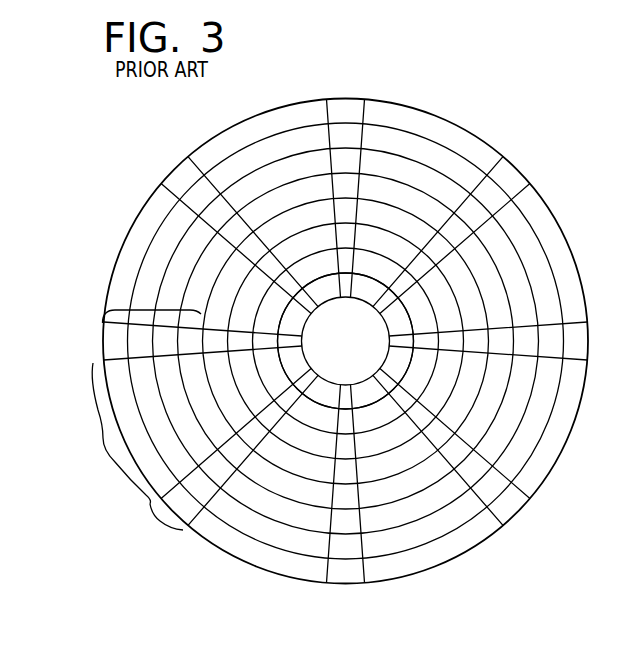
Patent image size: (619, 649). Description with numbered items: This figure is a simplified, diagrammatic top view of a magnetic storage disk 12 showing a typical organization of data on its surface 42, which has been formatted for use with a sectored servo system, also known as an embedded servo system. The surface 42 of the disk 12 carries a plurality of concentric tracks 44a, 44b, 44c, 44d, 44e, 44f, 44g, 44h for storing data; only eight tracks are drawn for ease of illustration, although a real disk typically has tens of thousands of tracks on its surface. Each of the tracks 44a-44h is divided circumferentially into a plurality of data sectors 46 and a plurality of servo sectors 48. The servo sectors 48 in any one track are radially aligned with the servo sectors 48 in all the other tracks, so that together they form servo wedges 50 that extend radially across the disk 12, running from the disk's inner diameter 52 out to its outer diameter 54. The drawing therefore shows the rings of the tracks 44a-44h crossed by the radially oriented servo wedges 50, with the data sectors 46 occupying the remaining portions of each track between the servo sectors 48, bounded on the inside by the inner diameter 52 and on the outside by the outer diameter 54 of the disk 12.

The disk 12 is at (230, 127).
The surface 42 is at (222, 222).
The track 44a is at (402, 117).
The track 44b is at (435, 157).
The track 44c is at (433, 187).
The track 44d is at (433, 210).
The track 44e is at (423, 452).
The track 44f is at (398, 433).
The track 44g is at (380, 417).
The track 44h is at (362, 395).
The data sector 46 is at (103, 438).
The servo sector 48 is at (160, 521).
The servo wedge 50 is at (203, 315).
The inner diameter 52 is at (305, 362).
The outer diameter 54 is at (232, 552).